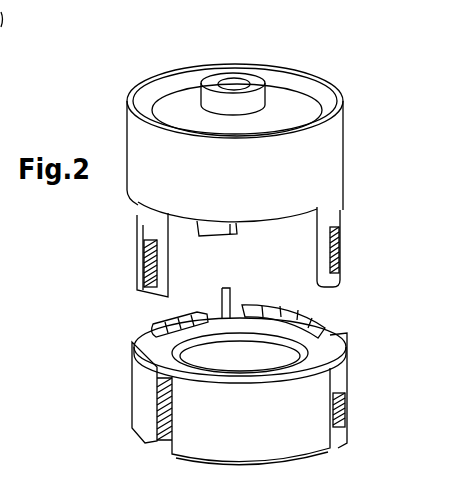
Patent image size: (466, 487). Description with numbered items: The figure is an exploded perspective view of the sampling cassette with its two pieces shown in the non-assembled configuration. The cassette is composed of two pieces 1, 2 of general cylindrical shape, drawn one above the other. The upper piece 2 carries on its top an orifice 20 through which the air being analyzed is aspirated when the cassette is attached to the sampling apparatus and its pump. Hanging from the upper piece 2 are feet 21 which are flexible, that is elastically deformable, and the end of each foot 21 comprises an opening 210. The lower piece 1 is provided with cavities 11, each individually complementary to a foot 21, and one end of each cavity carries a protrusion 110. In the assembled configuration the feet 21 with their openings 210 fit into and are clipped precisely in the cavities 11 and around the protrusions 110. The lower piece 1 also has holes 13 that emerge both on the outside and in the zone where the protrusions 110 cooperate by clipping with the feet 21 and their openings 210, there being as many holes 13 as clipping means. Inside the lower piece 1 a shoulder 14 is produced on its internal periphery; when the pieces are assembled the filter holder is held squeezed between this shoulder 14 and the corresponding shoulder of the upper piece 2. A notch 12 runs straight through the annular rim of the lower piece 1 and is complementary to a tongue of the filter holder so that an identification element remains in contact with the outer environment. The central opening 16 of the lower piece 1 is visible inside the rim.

The lower piece 1 is at (251, 415).
The cavities 11 is at (130, 383).
The protrusions 110 is at (130, 435).
The notch 12 is at (230, 296).
The holes 13 is at (345, 447).
The shoulder 14 is at (353, 333).
The central opening of ring 16 is at (312, 318).
The upper piece 2 is at (235, 143).
The orifice 20 is at (233, 78).
The feet 21 is at (137, 240).
The opening 210 is at (143, 258).